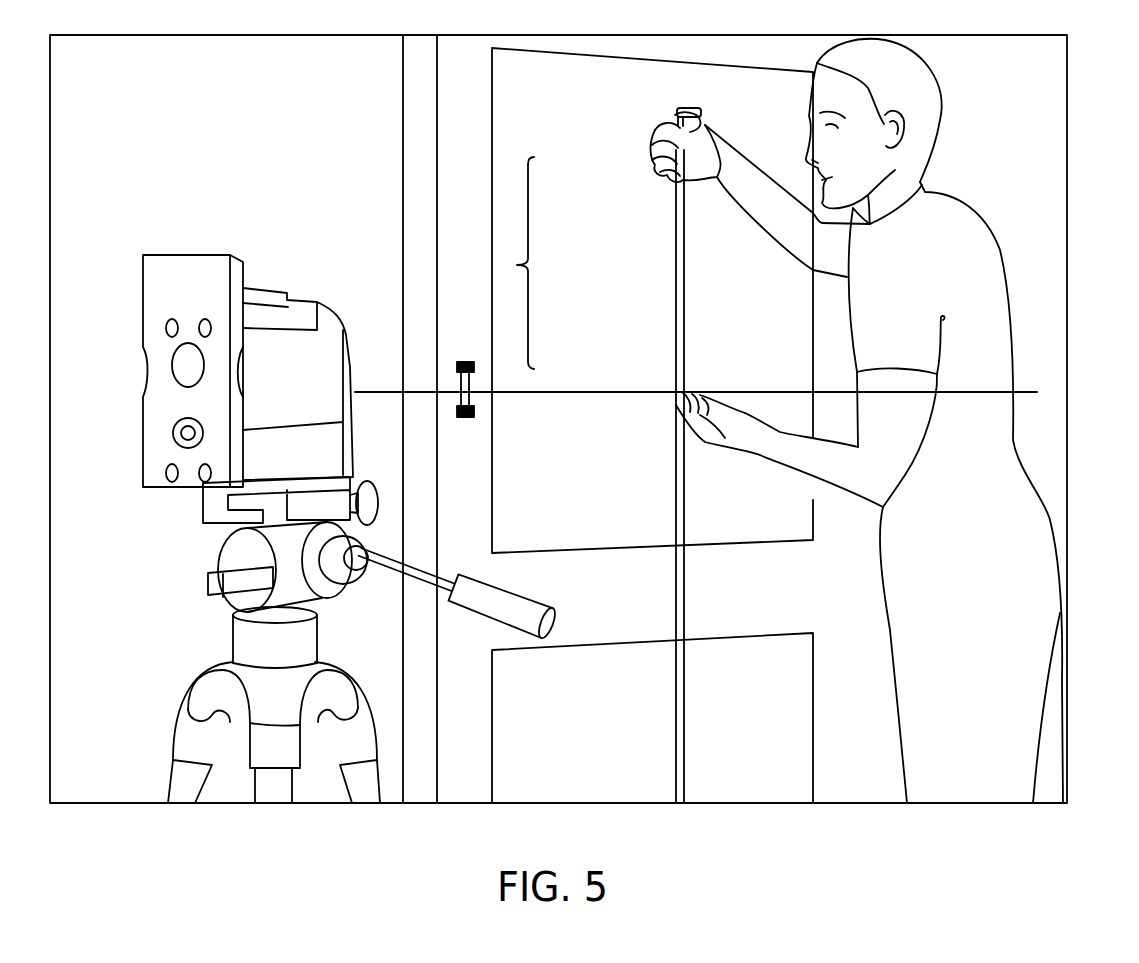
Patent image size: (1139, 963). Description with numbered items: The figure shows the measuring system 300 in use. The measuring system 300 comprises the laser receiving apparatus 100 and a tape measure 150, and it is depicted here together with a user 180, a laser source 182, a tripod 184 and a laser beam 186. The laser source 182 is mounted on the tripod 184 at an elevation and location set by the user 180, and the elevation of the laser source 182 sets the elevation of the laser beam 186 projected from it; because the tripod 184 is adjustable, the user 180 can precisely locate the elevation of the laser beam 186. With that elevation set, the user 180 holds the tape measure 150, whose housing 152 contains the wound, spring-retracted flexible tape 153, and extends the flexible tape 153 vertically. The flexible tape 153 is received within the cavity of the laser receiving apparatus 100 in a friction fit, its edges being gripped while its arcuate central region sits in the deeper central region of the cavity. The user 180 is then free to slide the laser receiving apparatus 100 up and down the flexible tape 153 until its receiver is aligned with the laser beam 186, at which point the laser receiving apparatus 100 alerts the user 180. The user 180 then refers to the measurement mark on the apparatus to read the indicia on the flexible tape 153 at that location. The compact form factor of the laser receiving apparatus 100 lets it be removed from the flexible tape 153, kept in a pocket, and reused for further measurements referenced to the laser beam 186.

The laser receiving apparatus 100 is at (618, 447).
The tape measure 150 is at (618, 447).
The housing 152 is at (665, 118).
The flexible tape 153 is at (639, 460).
The user 180 is at (1007, 250).
The laser source 182 is at (268, 288).
The tripod 184 is at (222, 622).
The laser beam 186 is at (381, 386).
The measuring system 300 is at (503, 263).